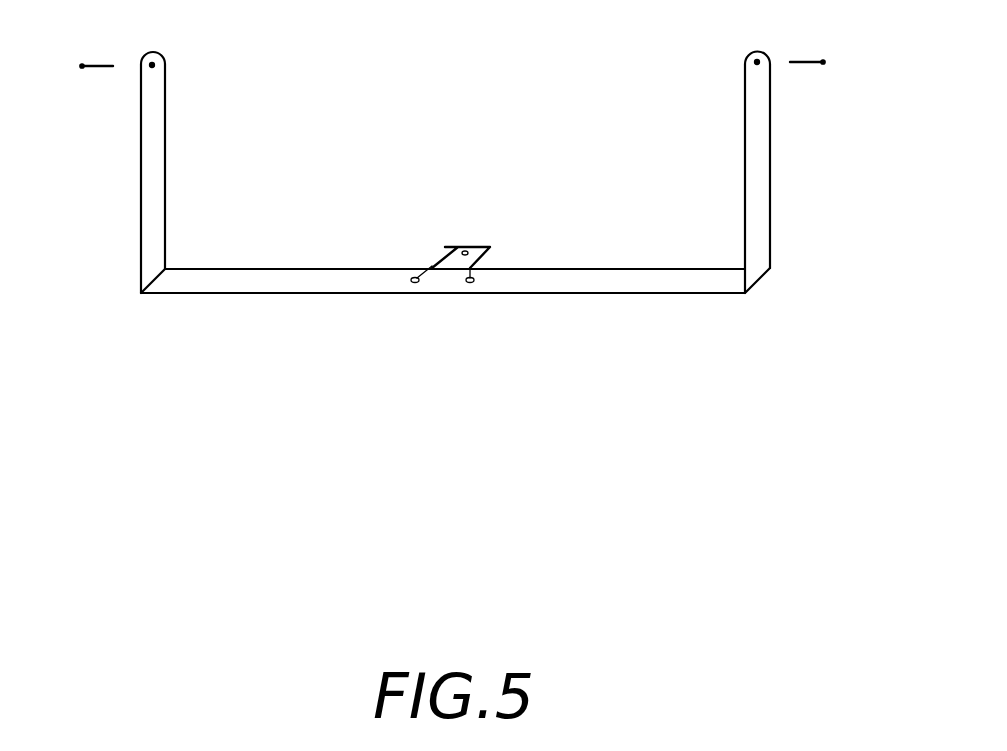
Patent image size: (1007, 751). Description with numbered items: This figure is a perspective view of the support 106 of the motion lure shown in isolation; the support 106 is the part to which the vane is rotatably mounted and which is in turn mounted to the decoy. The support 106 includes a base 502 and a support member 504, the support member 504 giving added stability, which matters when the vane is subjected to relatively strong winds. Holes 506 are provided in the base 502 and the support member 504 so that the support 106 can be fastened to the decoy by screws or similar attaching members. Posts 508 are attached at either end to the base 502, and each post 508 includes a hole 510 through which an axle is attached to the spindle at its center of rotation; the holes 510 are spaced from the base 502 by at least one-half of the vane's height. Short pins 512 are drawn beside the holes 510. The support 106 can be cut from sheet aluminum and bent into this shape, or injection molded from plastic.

The support 106 is at (843, 174).
The base 502 is at (355, 287).
The support member 504 is at (487, 247).
The holes 506 is at (460, 248).
The posts 508 is at (156, 200).
The hole 510 is at (178, 41).
The pivot pin 512 is at (107, 63).